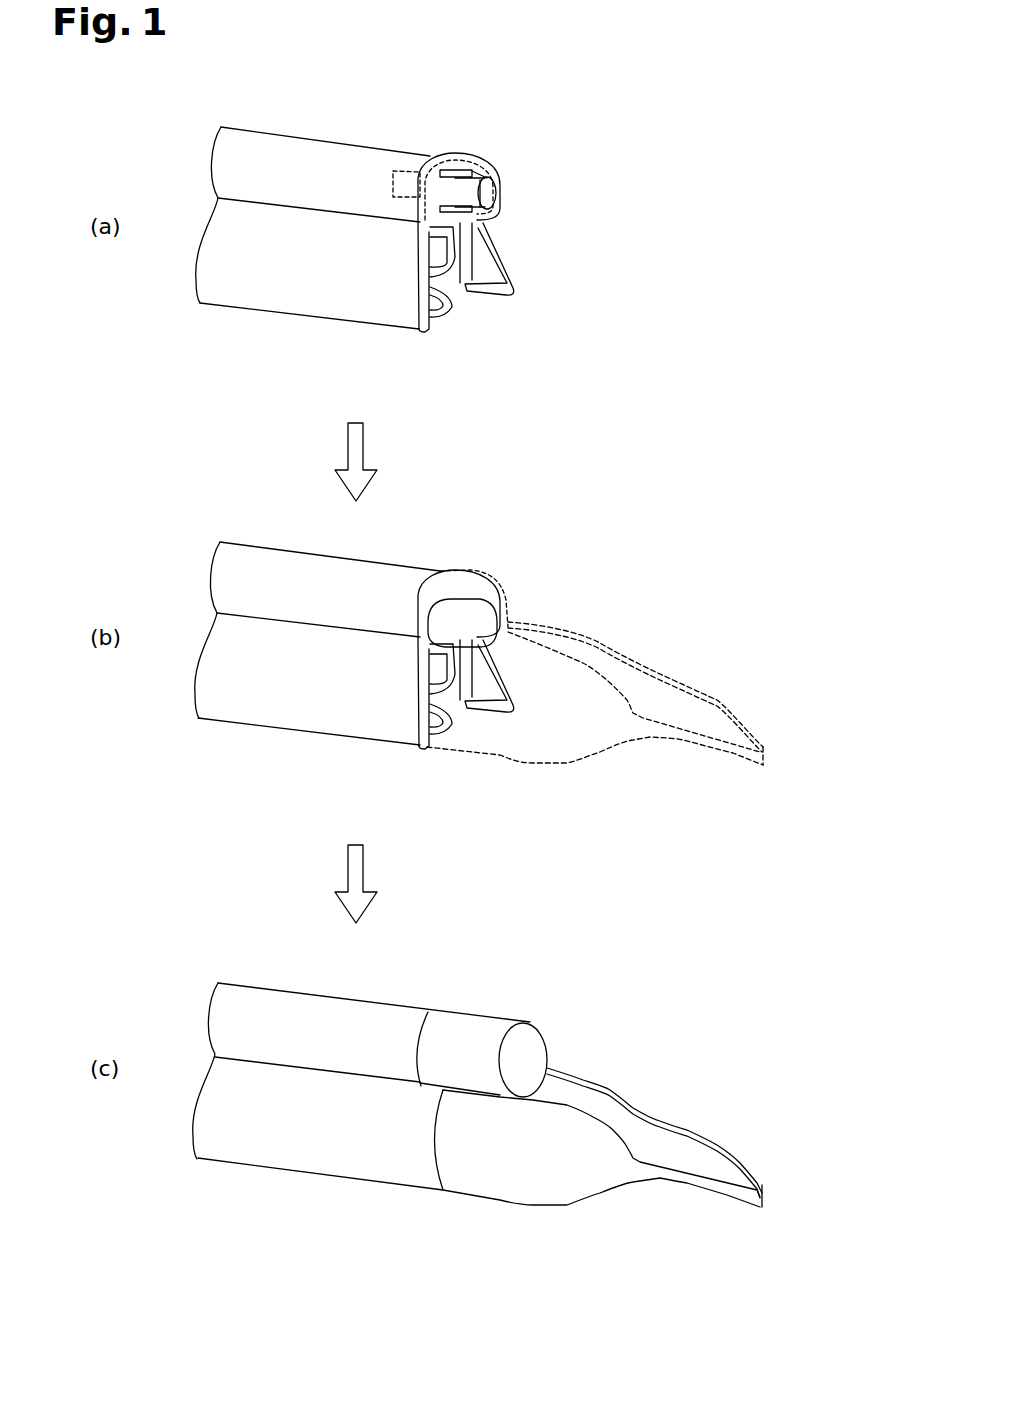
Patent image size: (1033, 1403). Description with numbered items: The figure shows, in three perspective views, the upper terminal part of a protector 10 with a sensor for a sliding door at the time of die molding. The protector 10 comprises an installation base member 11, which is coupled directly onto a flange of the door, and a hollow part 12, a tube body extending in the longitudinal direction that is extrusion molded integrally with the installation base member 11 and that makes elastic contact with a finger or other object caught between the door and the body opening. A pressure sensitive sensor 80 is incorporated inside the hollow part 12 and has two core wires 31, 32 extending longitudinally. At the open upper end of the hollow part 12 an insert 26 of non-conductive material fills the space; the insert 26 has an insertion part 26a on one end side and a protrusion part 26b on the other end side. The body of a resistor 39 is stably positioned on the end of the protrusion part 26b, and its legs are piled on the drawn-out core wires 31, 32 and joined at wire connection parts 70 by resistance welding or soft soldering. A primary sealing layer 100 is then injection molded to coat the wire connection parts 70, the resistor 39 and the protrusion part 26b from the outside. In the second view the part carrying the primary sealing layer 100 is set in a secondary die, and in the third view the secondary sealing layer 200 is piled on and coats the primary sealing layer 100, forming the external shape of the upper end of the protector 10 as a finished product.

The protector with the sensor 10 is at (361, 679).
The installation base member 11 is at (387, 303).
The hollow part 12 is at (381, 157).
The insert 26 is at (477, 126).
The insertion part 26a is at (418, 177).
The protrusion part 26b is at (470, 173).
The core wire 31 is at (452, 170).
The core wire 32 is at (432, 226).
The resistor 39 is at (495, 197).
The wire connection parts 70 is at (467, 183).
The sensor 80 is at (457, 170).
The primary sealing layer 100 is at (493, 570).
The secondary sealing layer 200 is at (610, 647).